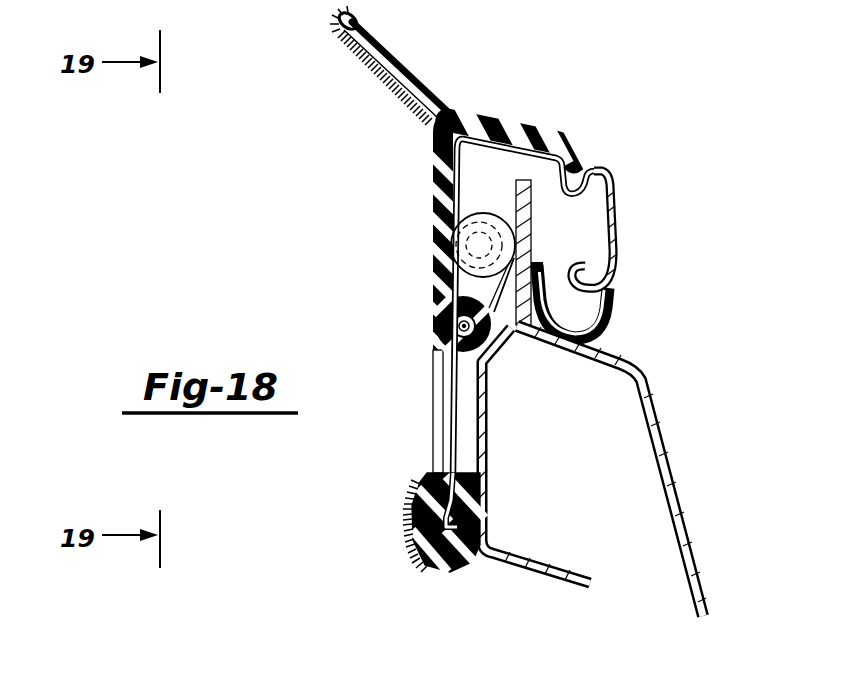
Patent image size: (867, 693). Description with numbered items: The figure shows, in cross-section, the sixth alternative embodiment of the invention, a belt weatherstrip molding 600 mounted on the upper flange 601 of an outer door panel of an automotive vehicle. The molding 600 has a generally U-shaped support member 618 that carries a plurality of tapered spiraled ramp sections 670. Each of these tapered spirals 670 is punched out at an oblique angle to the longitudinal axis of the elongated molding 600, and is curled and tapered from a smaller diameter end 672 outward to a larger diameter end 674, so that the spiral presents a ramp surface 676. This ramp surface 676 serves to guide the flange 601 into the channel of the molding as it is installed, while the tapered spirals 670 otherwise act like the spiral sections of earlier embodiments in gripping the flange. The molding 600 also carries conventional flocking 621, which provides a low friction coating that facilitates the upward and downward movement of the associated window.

The molding 600 is at (348, 167).
The upper flange 601 is at (525, 221).
The support member 618 is at (433, 473).
The flocking 621 is at (333, 32).
The tapered spiraled ramp section 670 is at (434, 311).
The smaller diameter end 672 is at (452, 327).
The larger diameter end 674 is at (456, 214).
The ramp surface 676 is at (516, 332).